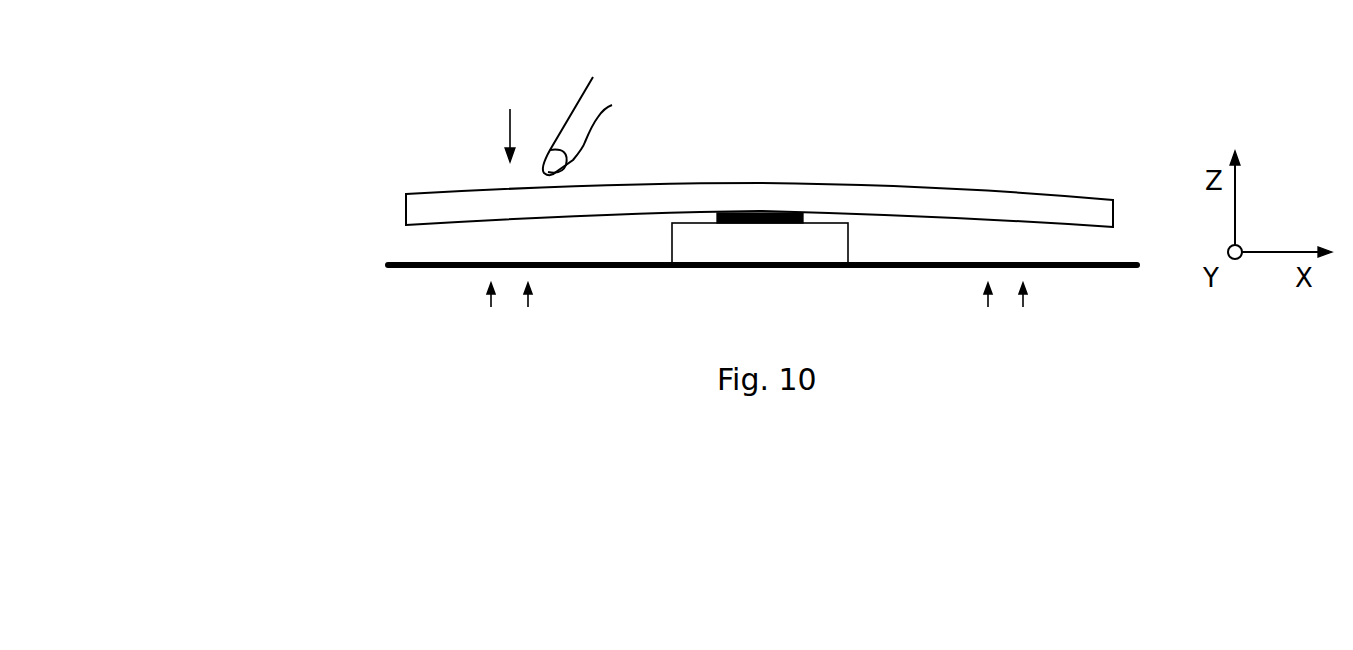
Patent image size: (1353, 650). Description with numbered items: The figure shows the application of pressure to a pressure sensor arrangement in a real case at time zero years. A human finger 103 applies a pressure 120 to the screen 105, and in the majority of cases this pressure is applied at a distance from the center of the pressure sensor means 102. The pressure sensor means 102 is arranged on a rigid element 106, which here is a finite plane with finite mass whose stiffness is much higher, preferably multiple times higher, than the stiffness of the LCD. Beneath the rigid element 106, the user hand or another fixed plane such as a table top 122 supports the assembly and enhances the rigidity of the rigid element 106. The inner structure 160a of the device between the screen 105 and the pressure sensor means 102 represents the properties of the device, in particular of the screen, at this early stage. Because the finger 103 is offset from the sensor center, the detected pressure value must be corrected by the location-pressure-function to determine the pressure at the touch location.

The pressure sensor means 102 is at (872, 233).
The human finger 103 is at (587, 105).
The screen 105 is at (1013, 195).
The rigid element 106 is at (387, 265).
The pressure 120 is at (510, 109).
The user hand or fixed plane 122 is at (487, 297).
The inner structure of the device 160a is at (680, 190).